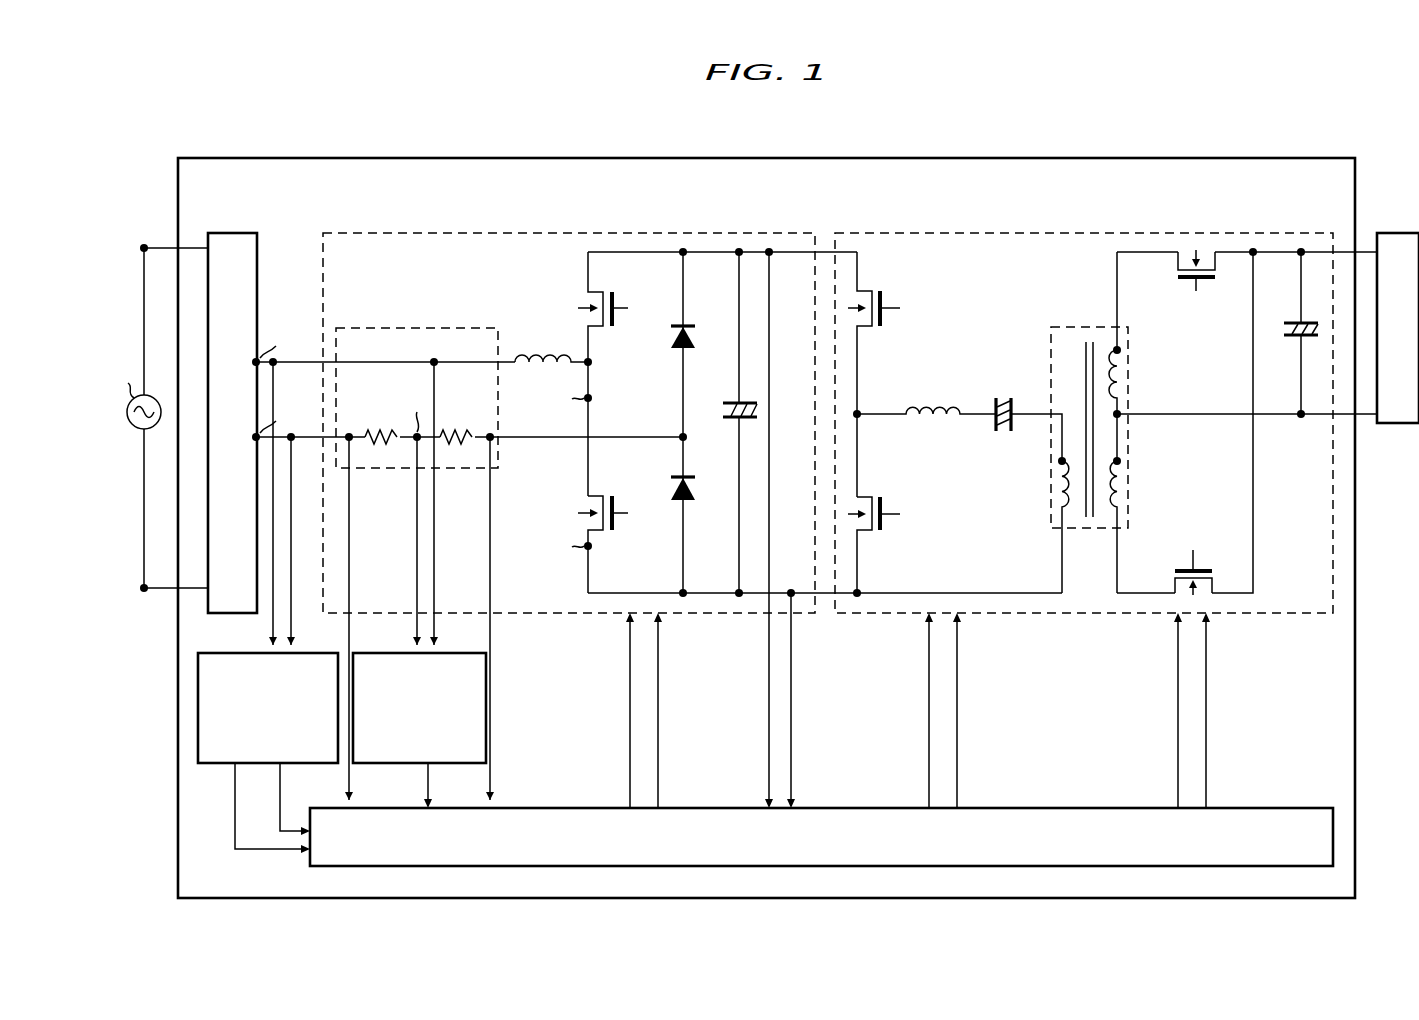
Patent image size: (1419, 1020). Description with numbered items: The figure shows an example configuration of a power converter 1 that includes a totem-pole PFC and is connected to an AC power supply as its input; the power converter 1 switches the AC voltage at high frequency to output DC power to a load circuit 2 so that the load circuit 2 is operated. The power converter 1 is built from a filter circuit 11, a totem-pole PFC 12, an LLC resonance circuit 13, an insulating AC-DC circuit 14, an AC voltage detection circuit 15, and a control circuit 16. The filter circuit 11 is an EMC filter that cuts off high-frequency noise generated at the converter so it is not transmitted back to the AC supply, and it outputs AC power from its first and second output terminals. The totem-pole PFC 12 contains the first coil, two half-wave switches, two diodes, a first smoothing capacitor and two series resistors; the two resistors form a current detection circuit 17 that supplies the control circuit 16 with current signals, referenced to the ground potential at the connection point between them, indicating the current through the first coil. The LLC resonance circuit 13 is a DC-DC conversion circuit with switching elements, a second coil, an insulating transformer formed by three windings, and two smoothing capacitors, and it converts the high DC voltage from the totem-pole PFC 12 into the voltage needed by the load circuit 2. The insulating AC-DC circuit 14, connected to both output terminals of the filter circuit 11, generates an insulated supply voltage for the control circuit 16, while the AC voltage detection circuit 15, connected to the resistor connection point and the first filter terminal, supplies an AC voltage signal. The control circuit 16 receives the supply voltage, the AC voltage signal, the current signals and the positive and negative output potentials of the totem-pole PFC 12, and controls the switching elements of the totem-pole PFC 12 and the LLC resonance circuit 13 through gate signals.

The power converter 1 is at (292, 158).
The load circuit 2 is at (1405, 233).
The filter circuit 11 is at (237, 233).
The totem-pole PFC 12 is at (419, 233).
The LLC resonance circuit 13 is at (947, 233).
The insulating AC-DC circuit 14 is at (198, 697).
The AC voltage detection circuit 15 is at (486, 698).
The control circuit 16 is at (1307, 808).
The current detection circuit 17 is at (419, 328).